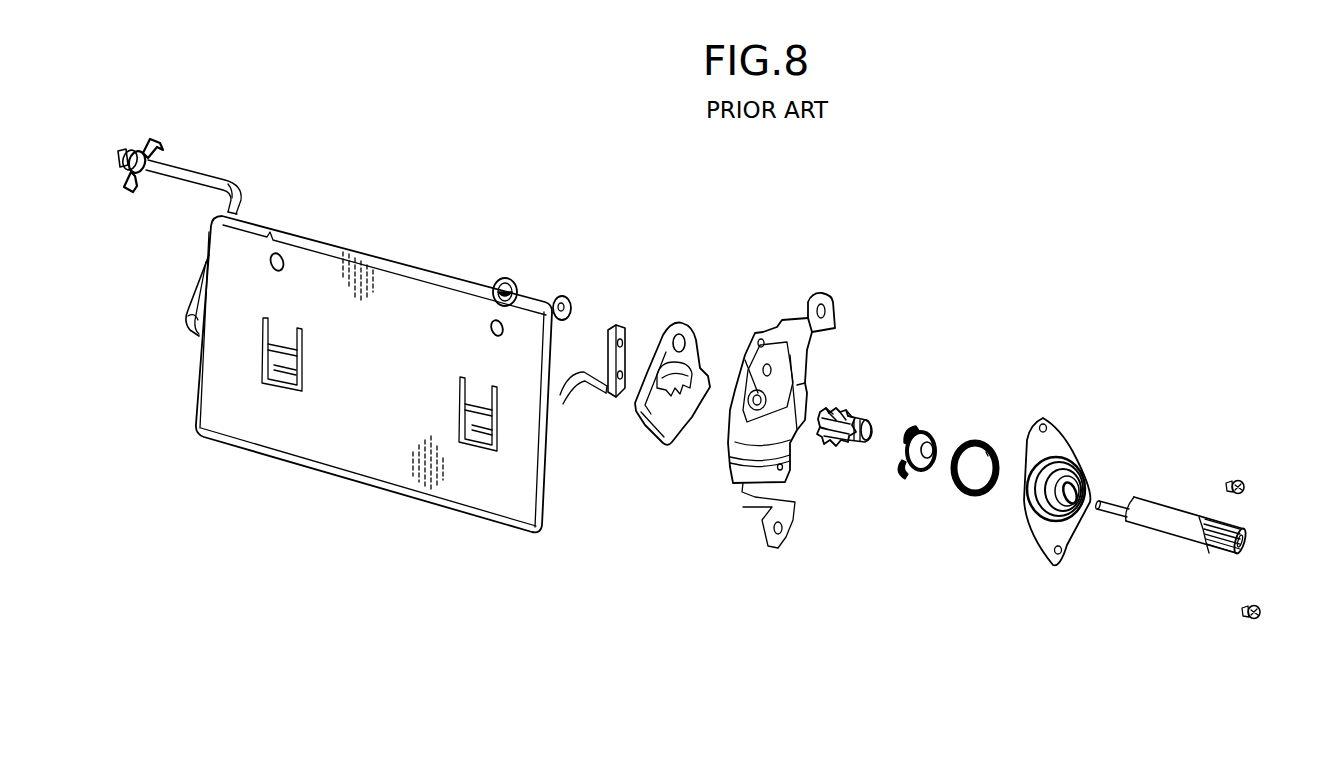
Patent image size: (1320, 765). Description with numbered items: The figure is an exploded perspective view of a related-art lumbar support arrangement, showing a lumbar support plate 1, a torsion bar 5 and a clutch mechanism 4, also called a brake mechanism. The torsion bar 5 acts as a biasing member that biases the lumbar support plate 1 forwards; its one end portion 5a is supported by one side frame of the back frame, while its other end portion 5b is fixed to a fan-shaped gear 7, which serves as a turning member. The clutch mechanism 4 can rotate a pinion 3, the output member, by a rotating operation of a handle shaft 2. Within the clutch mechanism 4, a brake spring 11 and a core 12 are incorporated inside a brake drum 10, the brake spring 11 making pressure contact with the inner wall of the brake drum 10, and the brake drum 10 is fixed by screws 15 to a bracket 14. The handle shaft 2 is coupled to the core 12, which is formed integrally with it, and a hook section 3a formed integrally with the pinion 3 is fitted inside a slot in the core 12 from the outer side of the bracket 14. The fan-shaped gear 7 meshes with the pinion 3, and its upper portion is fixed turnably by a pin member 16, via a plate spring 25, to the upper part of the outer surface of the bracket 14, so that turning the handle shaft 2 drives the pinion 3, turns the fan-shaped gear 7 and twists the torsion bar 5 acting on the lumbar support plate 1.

The lumbar support plate 1 is at (313, 447).
The handle shaft 2 is at (1157, 515).
The pinion 3 is at (845, 407).
The hook section 3a is at (872, 420).
The clutch mechanism 4 is at (1044, 612).
The torsion bar 5 is at (187, 330).
The one end portion of the torsion bar 5a is at (182, 170).
The other end portion of the torsion bar 5b is at (620, 328).
The fan-shaped gear 7 is at (680, 322).
The brake drum 10 is at (1058, 457).
The brake spring 11 is at (980, 440).
The core 12 is at (925, 478).
The bracket 14 is at (820, 293).
The screws 15 is at (1243, 477).
The pin member 16 is at (505, 276).
The plate spring 25 is at (563, 296).